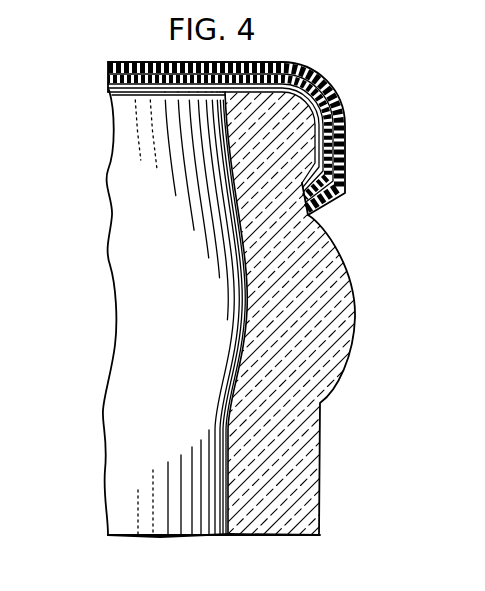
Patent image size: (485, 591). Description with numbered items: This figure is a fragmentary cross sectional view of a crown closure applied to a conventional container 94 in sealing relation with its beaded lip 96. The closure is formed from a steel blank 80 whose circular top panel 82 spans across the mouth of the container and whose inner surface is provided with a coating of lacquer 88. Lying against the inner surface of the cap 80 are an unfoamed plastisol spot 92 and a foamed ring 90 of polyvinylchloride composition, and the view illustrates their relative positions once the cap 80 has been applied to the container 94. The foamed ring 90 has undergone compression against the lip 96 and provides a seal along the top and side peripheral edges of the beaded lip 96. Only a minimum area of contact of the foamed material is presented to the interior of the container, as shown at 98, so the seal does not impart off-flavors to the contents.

The steel blank 80 is at (108, 68).
The top panel 82 is at (133, 64).
The coating of lacquer 88 is at (328, 101).
The gasket 90 is at (320, 85).
The unfoamed plastisol spot 92 is at (107, 79).
The container 94 is at (322, 353).
The lip 96 is at (257, 142).
The area of contact of the foamed material 98 is at (253, 66).